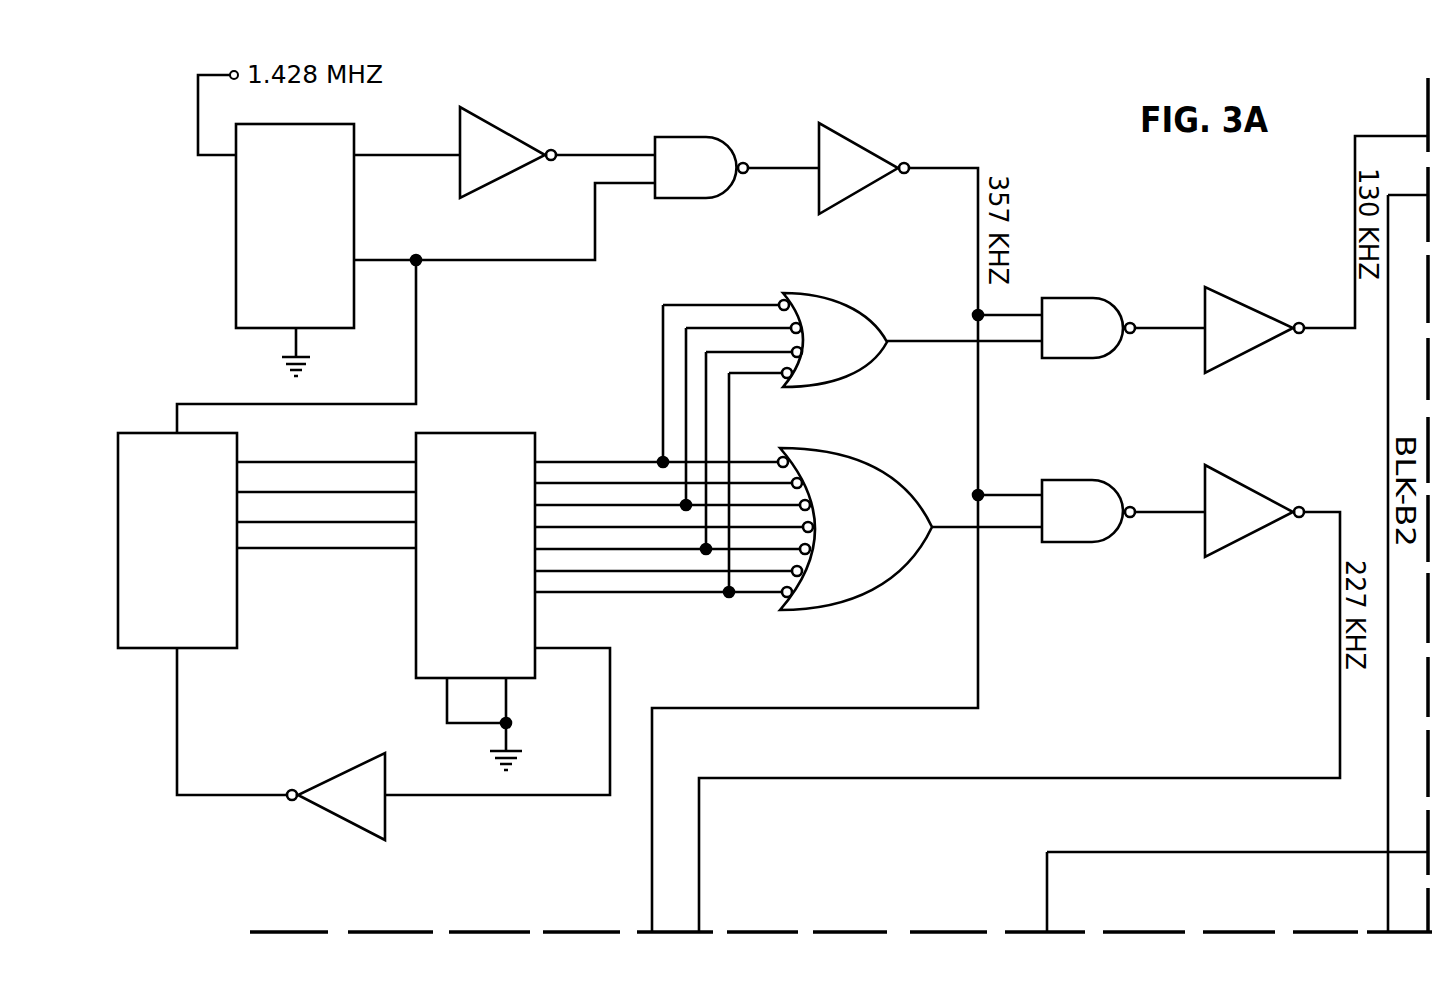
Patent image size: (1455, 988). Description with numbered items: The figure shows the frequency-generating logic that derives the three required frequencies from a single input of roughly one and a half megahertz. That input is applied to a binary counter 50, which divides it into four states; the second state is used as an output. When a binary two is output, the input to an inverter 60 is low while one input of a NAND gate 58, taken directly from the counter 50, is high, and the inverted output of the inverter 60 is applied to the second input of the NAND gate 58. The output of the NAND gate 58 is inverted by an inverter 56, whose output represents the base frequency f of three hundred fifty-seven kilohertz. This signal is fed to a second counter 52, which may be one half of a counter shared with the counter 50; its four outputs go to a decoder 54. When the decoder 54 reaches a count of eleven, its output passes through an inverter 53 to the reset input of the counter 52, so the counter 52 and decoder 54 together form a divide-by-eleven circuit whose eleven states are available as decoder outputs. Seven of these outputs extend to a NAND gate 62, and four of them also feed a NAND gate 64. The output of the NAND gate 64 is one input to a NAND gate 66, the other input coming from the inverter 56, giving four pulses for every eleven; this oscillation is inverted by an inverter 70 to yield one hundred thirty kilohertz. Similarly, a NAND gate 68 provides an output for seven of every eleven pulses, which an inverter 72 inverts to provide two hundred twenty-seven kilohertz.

The binary counter 50 is at (236, 268).
The second counter 52 is at (237, 628).
The inverter 53 is at (325, 780).
The decoder 54 is at (416, 640).
The inverter 56 is at (845, 137).
The NAND gate 58 is at (693, 137).
The inverter 60 is at (497, 122).
The NAND gate 62 is at (858, 448).
The NAND gate 64 is at (835, 292).
The NAND gate 66 is at (1078, 298).
The NAND gate 68 is at (1108, 440).
The inverter 70 is at (1250, 307).
The inverter 72 is at (1265, 497).